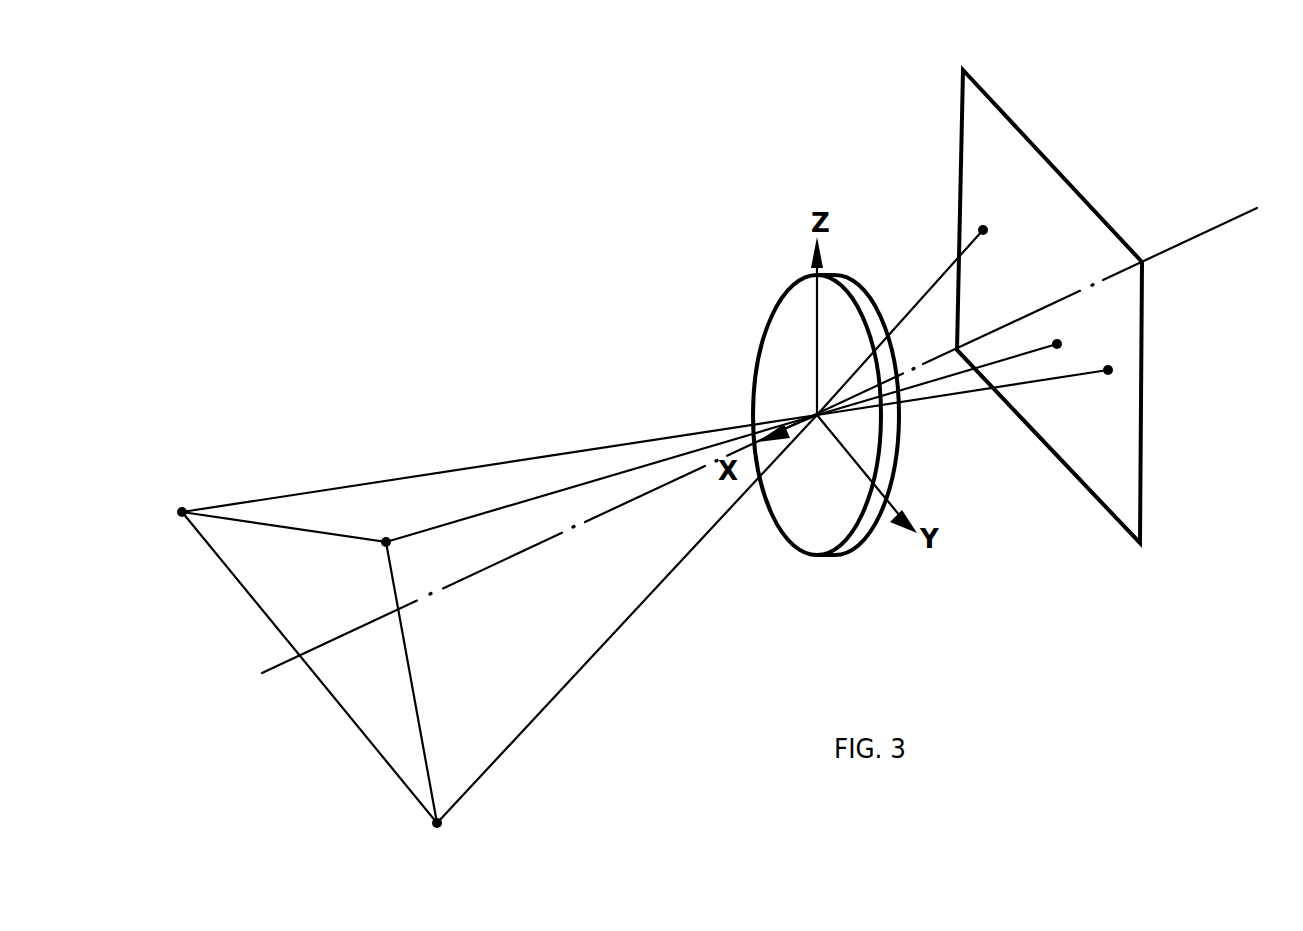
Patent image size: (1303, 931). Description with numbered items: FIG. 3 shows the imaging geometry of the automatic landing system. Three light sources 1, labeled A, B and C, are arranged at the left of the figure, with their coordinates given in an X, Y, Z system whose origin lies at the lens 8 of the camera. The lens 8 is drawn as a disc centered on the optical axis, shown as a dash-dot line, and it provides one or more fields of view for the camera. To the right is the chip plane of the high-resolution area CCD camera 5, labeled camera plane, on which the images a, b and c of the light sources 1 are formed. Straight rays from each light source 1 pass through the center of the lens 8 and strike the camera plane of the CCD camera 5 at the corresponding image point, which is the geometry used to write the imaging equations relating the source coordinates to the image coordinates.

The light sources 1 is at (184, 518).
The high-resolution area CCD camera 5 is at (1141, 447).
The lens 8 is at (845, 540).